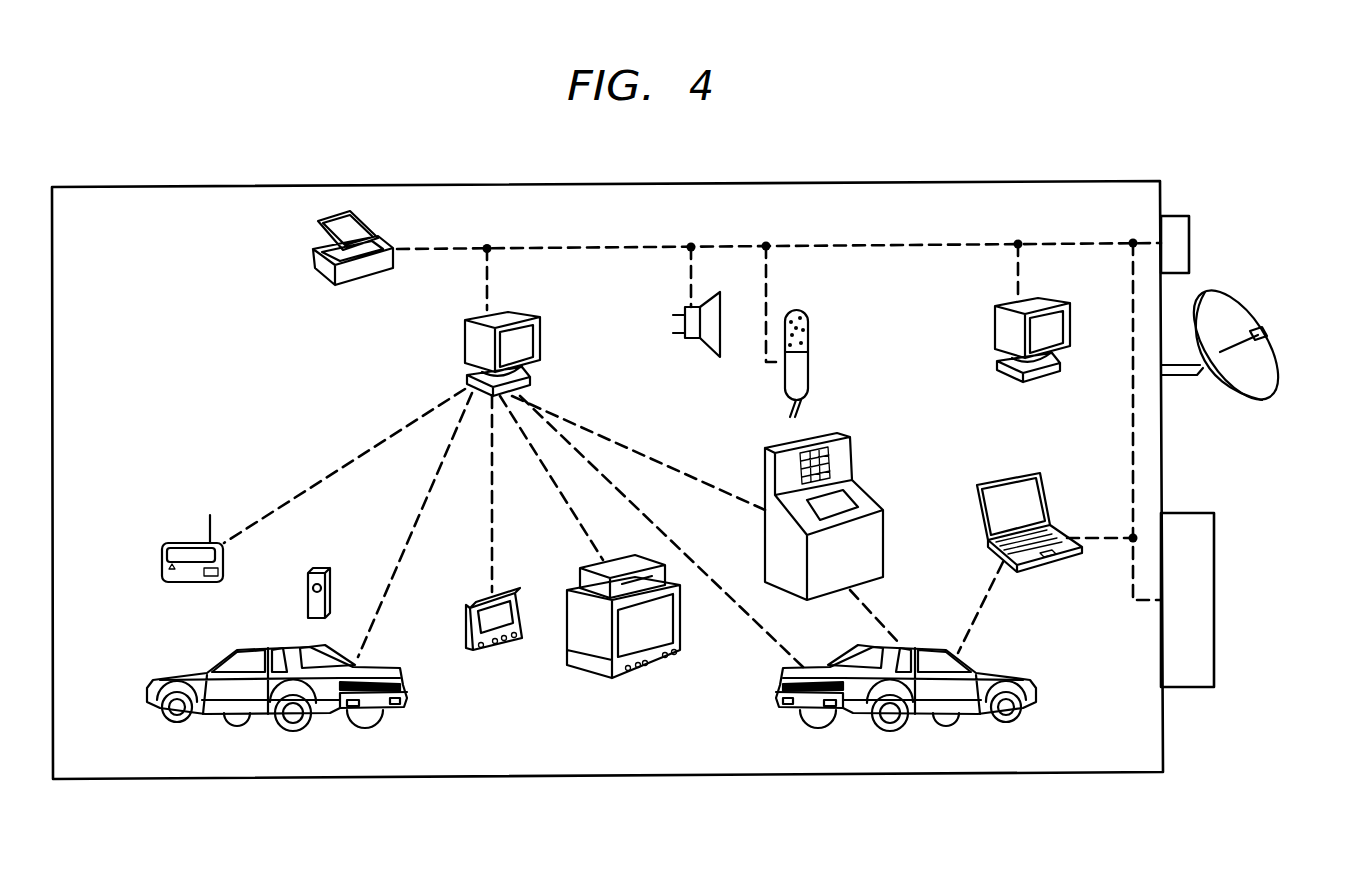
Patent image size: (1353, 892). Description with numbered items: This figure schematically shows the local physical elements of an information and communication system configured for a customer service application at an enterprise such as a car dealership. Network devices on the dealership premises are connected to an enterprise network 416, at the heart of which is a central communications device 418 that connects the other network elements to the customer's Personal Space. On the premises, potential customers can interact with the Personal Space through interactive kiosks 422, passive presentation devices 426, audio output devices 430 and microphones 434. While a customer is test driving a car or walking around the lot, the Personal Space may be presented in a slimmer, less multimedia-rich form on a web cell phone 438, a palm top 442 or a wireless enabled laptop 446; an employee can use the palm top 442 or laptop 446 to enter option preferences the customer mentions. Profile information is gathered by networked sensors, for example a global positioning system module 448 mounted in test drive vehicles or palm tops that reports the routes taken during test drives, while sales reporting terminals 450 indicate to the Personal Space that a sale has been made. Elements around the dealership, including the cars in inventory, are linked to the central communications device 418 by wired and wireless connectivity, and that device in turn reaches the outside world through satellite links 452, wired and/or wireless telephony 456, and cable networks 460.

The enterprise network 416 is at (877, 246).
The central communications device 418 is at (538, 375).
The interactive kiosk 422 is at (853, 456).
The passive presentation device 426 is at (587, 672).
The audio output device 430 is at (690, 340).
The microphone 434 is at (810, 334).
The web cell phone 438 is at (308, 592).
The palm top 442 is at (468, 622).
The wireless enabled laptop 446 is at (1045, 493).
The global positioning system module 448 is at (160, 562).
The sales reporting terminal 450 is at (992, 320).
The satellite link 452 is at (1277, 363).
The wired and/or wireless telephony 456 is at (1190, 247).
The cable network 460 is at (1214, 599).